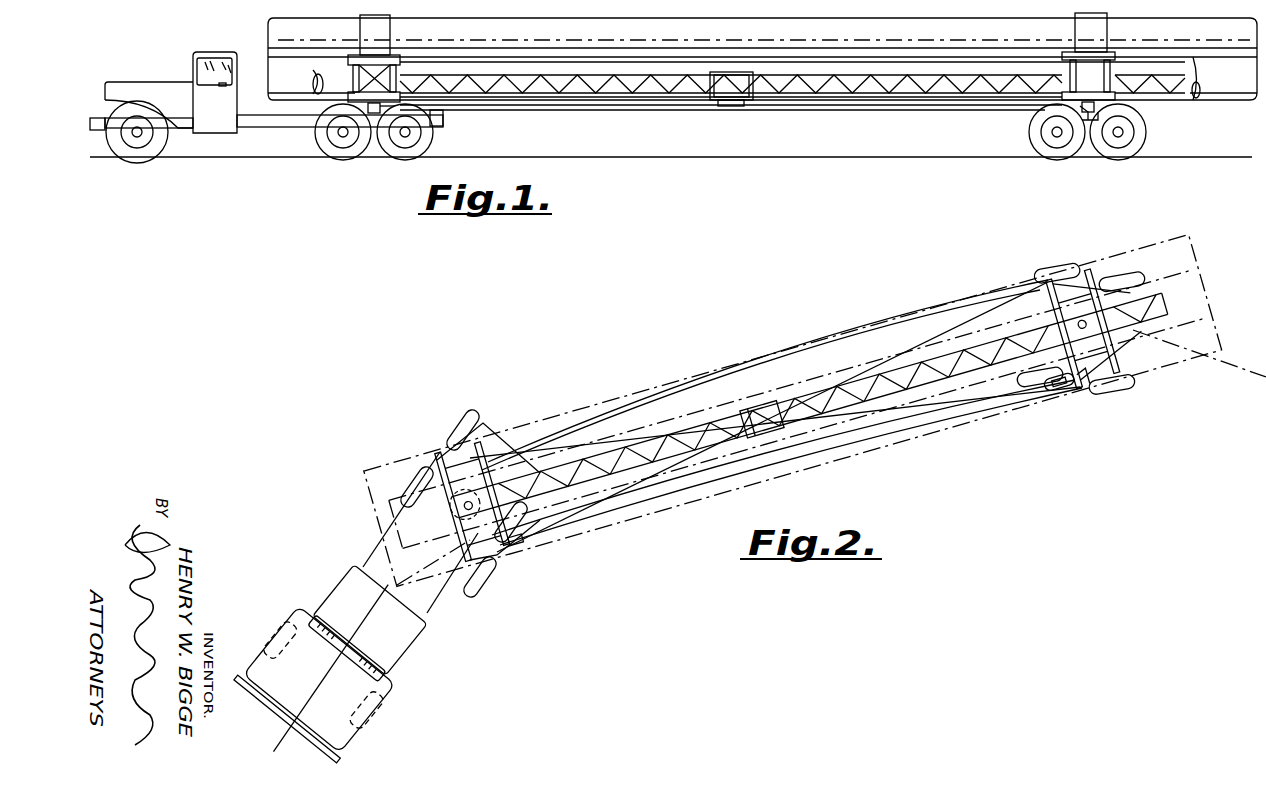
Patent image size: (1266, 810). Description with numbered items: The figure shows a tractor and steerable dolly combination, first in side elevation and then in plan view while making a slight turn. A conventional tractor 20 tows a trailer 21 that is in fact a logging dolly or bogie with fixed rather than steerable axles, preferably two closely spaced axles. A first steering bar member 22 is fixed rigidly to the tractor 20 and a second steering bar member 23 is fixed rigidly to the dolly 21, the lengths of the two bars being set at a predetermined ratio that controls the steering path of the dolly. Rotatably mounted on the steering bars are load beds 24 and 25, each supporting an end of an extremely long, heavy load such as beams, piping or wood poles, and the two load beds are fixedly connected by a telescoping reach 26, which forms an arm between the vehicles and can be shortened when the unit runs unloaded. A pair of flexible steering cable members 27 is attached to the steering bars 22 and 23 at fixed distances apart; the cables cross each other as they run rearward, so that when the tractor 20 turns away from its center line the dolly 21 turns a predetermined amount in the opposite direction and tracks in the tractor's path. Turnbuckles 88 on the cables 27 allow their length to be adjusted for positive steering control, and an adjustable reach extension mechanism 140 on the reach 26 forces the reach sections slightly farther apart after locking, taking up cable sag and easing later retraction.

In FIG. 1, the tractor 20 is at (178, 78).
In FIG. 2, the tractor 20 is at (345, 584).
In FIG. 1, the trailer (logging dolly) 21 is at (1098, 118).
In FIG. 1, the first steering bar member 22 is at (375, 113).
In FIG. 2, the first steering bar member 22 is at (512, 548).
In FIG. 1, the second steering bar member 23 is at (1078, 150).
In FIG. 2, the second steering bar member 23 is at (1076, 386).
In FIG. 1, the load bed 24 is at (348, 100).
In FIG. 2, the load bed 24 is at (466, 540).
In FIG. 1, the load bed 25 is at (1068, 95).
In FIG. 2, the load bed 25 is at (1128, 368).
In FIG. 1, the telescoping reach 26 is at (870, 100).
In FIG. 2, the telescoping reach 26 is at (926, 388).
In FIG. 1, the flexible steering cable members 27 is at (590, 104).
In FIG. 2, the flexible steering cable members 27 is at (650, 436).
In FIG. 2, the turnbuckles 88 is at (1050, 392).
In FIG. 1, the adjustable reach extension mechanism 140 is at (738, 106).
In FIG. 2, the adjustable reach extension mechanism 140 is at (762, 419).